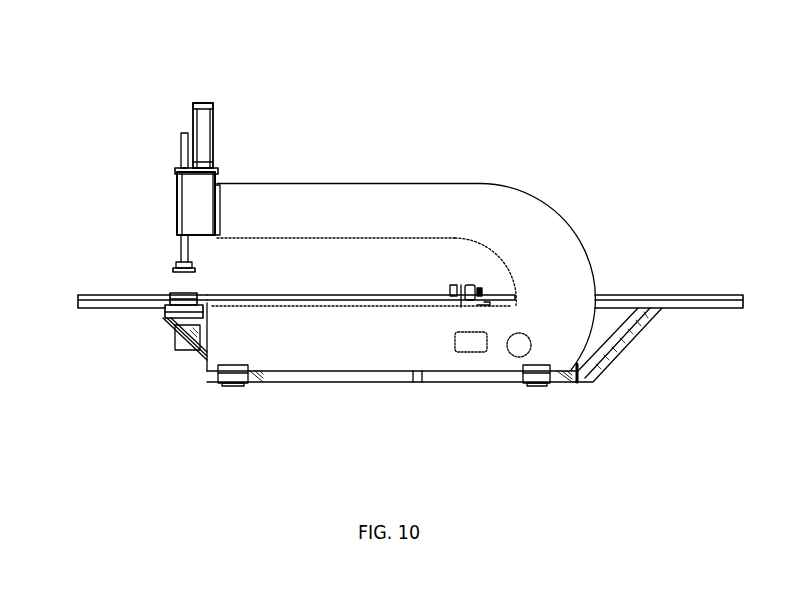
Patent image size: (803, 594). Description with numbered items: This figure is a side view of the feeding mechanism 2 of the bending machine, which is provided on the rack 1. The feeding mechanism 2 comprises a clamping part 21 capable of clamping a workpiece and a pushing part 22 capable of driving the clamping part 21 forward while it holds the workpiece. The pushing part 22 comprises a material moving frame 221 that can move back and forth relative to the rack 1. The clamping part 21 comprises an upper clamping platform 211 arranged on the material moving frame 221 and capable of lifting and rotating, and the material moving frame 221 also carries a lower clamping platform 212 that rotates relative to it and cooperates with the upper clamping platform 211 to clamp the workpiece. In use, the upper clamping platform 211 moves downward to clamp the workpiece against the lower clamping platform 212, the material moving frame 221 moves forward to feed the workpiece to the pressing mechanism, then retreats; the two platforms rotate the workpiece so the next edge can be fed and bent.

The rack 1 is at (637, 310).
The feeding mechanism 2 is at (272, 163).
The clamping part 21 is at (67, 208).
The upper clamping platform 211 is at (178, 262).
The lower clamping platform 212 is at (178, 292).
The pushing part 22 is at (560, 207).
The material moving frame 221 is at (360, 340).